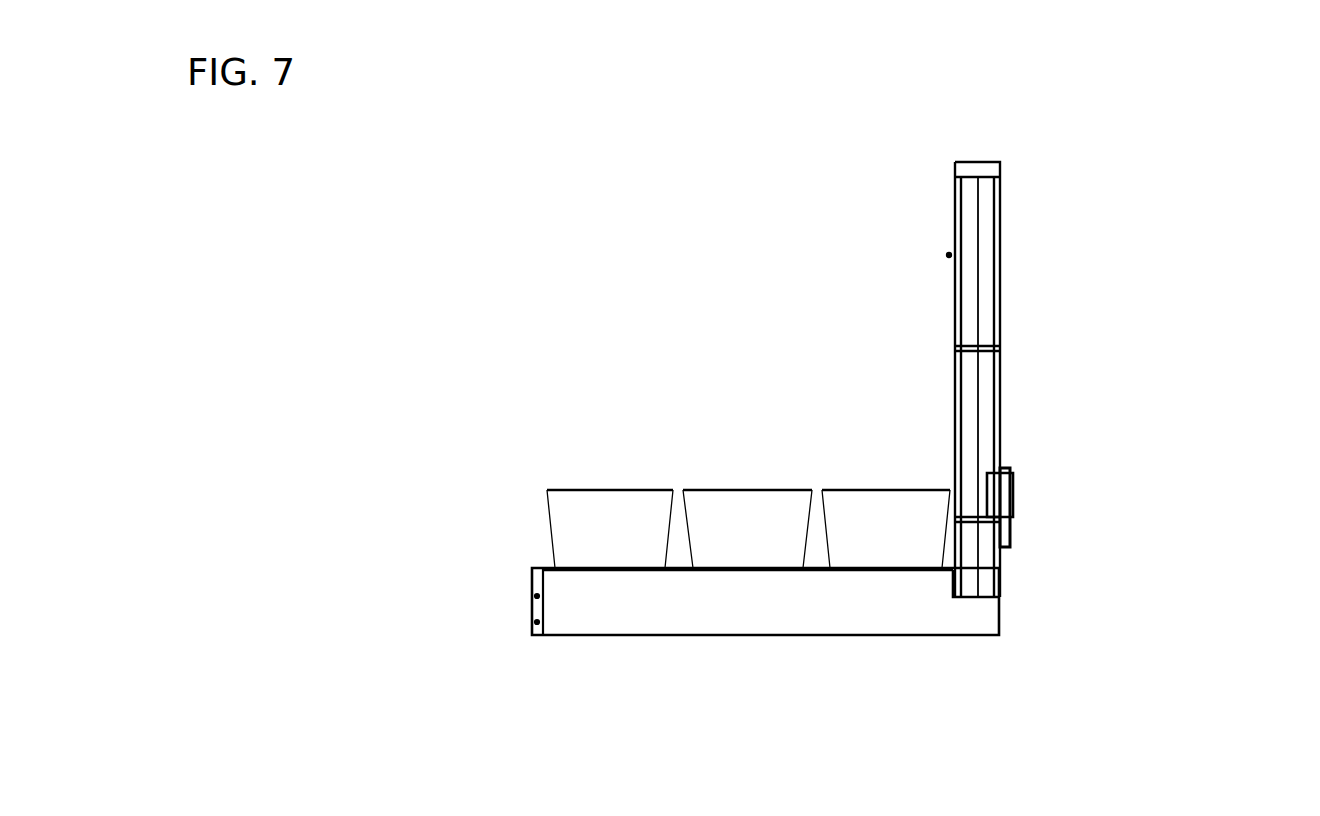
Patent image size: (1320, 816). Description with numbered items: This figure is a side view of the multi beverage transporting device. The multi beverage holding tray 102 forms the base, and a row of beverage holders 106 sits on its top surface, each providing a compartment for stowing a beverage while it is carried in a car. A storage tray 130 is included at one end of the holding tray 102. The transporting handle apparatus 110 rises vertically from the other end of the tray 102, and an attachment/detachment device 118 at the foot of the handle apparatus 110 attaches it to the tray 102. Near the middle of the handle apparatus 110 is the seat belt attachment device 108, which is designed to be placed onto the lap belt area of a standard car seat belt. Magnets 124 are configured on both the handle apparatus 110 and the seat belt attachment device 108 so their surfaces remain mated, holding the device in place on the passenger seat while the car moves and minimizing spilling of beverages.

The multi beverage holding tray 102 is at (665, 611).
The beverage holders 106 is at (556, 490).
The seat belt attachment device 108 is at (1002, 470).
The transporting handle apparatus 110 is at (993, 164).
The attachment/detachment device 118 is at (1000, 595).
The magnets 124 is at (1002, 470).
The storage tray 130 is at (535, 595).